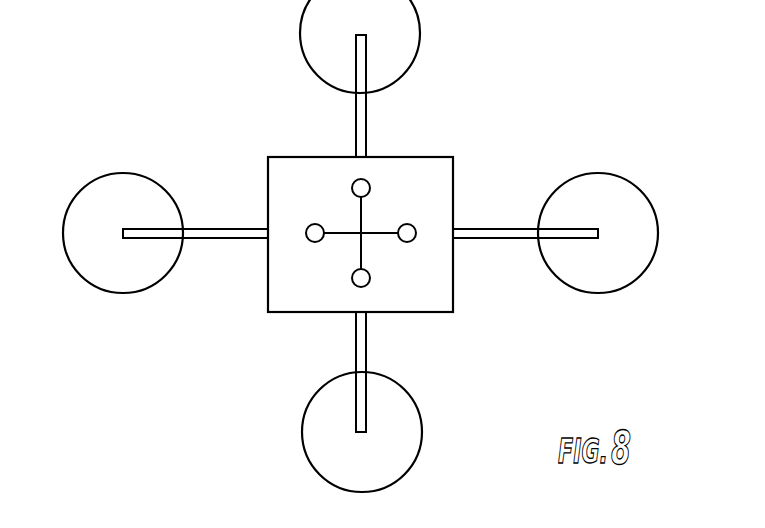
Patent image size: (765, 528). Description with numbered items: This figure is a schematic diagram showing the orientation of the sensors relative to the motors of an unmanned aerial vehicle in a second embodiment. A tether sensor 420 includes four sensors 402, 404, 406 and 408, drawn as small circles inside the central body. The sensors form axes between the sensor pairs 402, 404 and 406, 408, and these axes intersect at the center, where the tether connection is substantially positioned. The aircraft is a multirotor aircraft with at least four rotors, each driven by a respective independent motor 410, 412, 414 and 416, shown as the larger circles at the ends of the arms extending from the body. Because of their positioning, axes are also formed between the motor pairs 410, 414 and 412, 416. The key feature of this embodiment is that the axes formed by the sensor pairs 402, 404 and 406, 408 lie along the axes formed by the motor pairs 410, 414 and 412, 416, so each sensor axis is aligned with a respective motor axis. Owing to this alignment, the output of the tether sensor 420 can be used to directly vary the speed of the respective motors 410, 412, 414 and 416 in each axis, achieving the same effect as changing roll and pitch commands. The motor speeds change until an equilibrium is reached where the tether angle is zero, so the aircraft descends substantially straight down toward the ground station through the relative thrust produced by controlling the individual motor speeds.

The sensor 402 is at (408, 224).
The sensor 404 is at (313, 242).
The sensor 406 is at (371, 278).
The sensor 408 is at (368, 185).
The motor 410 is at (637, 218).
The motor 412 is at (411, 20).
The motor 414 is at (118, 180).
The motor 416 is at (405, 427).
The tether sensor 420 is at (452, 295).